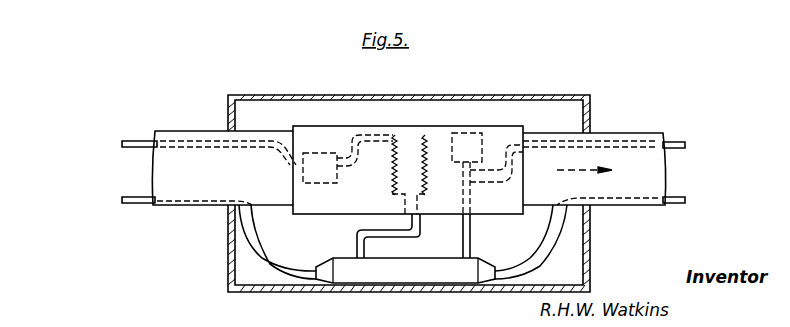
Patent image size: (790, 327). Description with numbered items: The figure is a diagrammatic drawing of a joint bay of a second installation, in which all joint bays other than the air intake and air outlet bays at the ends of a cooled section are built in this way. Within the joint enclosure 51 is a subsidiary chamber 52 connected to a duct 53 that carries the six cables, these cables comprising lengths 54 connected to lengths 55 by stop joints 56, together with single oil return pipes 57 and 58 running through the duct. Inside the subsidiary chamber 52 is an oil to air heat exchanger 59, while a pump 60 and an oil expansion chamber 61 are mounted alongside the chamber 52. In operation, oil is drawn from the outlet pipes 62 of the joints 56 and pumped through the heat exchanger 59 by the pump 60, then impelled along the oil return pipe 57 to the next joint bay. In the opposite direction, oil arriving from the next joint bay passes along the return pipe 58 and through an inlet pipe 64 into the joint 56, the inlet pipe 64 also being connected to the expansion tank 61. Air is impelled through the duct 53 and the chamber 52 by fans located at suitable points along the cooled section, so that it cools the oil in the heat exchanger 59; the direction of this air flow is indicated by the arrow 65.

The joint enclosure 51 is at (257, 96).
The subsidiary chamber 52 is at (318, 126).
The duct 53 is at (198, 130).
The cable lengths 54 is at (143, 204).
The cable lengths 55 is at (673, 205).
The stop joints 56 is at (403, 277).
The oil return pipe 57 is at (135, 148).
The oil return pipe 58 is at (675, 149).
The oil to air heat exchanger 59 is at (402, 163).
The pump 60 is at (324, 165).
The oil expansion chamber 61 is at (468, 150).
The outlet pipes 62 is at (357, 242).
The inlet pipe 64 is at (471, 233).
The arrow 65 is at (584, 162).